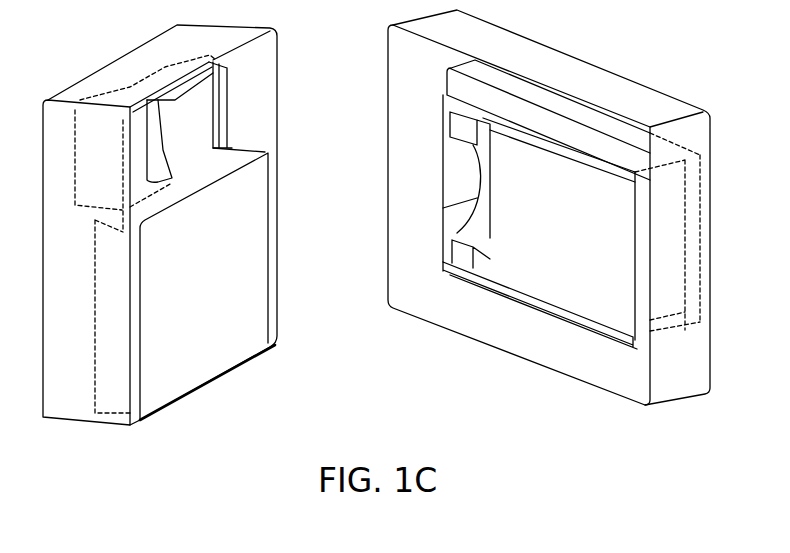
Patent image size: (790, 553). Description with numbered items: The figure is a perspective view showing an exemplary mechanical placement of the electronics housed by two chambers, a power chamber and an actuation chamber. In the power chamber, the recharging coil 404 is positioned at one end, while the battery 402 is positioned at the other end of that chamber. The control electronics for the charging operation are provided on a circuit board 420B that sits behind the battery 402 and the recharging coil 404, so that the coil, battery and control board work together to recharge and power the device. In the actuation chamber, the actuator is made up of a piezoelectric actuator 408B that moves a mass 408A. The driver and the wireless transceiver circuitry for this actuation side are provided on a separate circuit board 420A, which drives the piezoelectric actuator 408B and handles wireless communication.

The battery 402 is at (570, 278).
The recharging coil 404 is at (477, 192).
The mass 408A is at (153, 78).
The piezoelectric actuator 408B is at (207, 112).
The circuit board 420A is at (225, 380).
The circuit board 420B is at (690, 278).